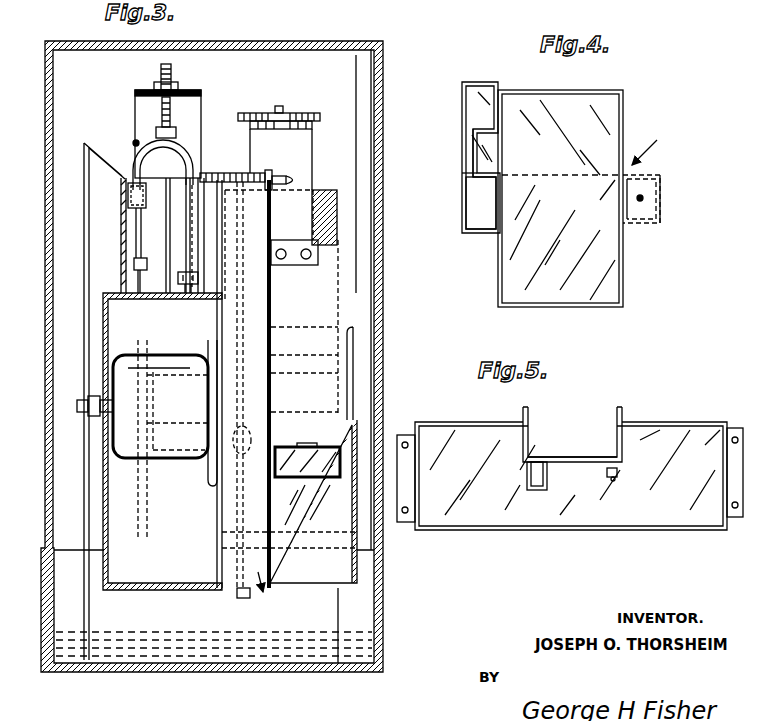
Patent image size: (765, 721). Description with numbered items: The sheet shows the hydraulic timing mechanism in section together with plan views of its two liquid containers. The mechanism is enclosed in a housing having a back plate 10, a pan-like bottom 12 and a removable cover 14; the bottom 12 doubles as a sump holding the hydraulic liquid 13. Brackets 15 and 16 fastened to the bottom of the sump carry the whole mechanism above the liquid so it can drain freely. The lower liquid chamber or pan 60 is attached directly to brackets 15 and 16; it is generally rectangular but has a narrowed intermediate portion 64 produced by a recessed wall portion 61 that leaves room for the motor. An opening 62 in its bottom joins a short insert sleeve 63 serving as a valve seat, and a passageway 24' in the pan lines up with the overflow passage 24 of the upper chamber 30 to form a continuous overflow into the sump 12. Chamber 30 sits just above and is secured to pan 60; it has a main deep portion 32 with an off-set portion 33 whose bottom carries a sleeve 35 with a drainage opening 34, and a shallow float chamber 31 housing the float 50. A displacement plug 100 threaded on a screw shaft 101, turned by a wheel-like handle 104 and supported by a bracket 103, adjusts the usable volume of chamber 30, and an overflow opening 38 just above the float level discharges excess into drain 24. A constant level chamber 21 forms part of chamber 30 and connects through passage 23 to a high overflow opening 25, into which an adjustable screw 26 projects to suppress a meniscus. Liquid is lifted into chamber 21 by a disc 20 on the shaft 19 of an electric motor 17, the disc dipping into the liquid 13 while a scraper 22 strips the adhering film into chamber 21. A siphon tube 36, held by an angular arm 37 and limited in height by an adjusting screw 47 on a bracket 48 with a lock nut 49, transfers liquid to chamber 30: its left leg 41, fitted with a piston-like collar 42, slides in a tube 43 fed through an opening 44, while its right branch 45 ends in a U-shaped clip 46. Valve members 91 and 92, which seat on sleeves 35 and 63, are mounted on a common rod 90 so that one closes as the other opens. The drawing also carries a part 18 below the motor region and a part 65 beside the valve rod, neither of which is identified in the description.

In FIG. 3, the back plate 10 is at (45, 206).
In FIG. 3, the pan-like bottom 12 is at (373, 568).
In FIG. 3, the liquid 13 is at (186, 634).
In FIG. 3, the removable cover 14 is at (383, 50).
In FIG. 5, the bracket 15 is at (405, 523).
In FIG. 3, the bracket 16 is at (316, 610).
In FIG. 5, the bracket 16 is at (735, 518).
In FIG. 3, the electric motor 17 is at (120, 360).
In FIG. 3, the compartment 18 is at (118, 514).
In FIG. 3, the shaft 19 is at (78, 404).
In FIG. 3, the disc 20 is at (84, 248).
In FIG. 3, the constant level liquid chamber 21 is at (121, 188).
In FIG. 4, the constant level liquid chamber 21 is at (466, 100).
In FIG. 3, the scoop or scraper 22 is at (108, 165).
In FIG. 4, the passage 23 is at (473, 153).
In FIG. 3, the overflow passage 24 is at (287, 384).
In FIG. 4, the overflow passage 24 is at (459, 203).
In FIG. 3, the passageway 24' is at (191, 420).
In FIG. 5, the passageway 24' is at (512, 476).
In FIG. 4, the overflow opening 25 is at (466, 183).
In FIG. 3, the adjustable screw 26 is at (235, 173).
In FIG. 4, the liquid chamber 30 is at (655, 145).
In FIG. 4, the shallow portion or float chamber 31 is at (600, 121).
In FIG. 4, the main or deep portion 32 is at (610, 283).
In FIG. 4, the off-set portion 33 is at (655, 215).
In FIG. 4, the opening 34 is at (660, 188).
In FIG. 4, the insert or sleeve 35 is at (645, 198).
In FIG. 3, the siphon tube 36 is at (184, 150).
In FIG. 3, the angular arm 37 is at (138, 142).
In FIG. 3, the overflow opening 38 is at (208, 265).
In FIG. 3, the left leg 41 is at (135, 232).
In FIG. 3, the piston-like collar 42 is at (133, 270).
In FIG. 3, the tube 43 is at (147, 203).
In FIG. 3, the opening 44 is at (142, 282).
In FIG. 3, the right branch 45 is at (213, 228).
In FIG. 3, the U-shaped clip 46 is at (187, 285).
In FIG. 3, the adjusting screw 47 is at (172, 113).
In FIG. 3, the bracket 48 is at (196, 92).
In FIG. 3, the lock nut 49 is at (156, 86).
In FIG. 3, the float 50 is at (181, 270).
In FIG. 5, the liquid chamber or pan 60 is at (653, 412).
In FIG. 5, the recessed wall portion 61 is at (571, 458).
In FIG. 5, the opening 62 is at (607, 476).
In FIG. 5, the insert tube or sleeve 63 is at (613, 482).
In FIG. 5, the narrowed intermediate portion 64 is at (568, 520).
In FIG. 3, the motor unit 65 is at (306, 478).
In FIG. 3, the valve rod 90 is at (237, 514).
In FIG. 3, the valve member 91 is at (247, 453).
In FIG. 3, the valve member 92 is at (235, 580).
In FIG. 3, the displacement plug 100 is at (328, 218).
In FIG. 3, the screw shaft 101 is at (279, 106).
In FIG. 3, the bracket 103 is at (250, 134).
In FIG. 3, the wheel-like handle 104 is at (303, 113).